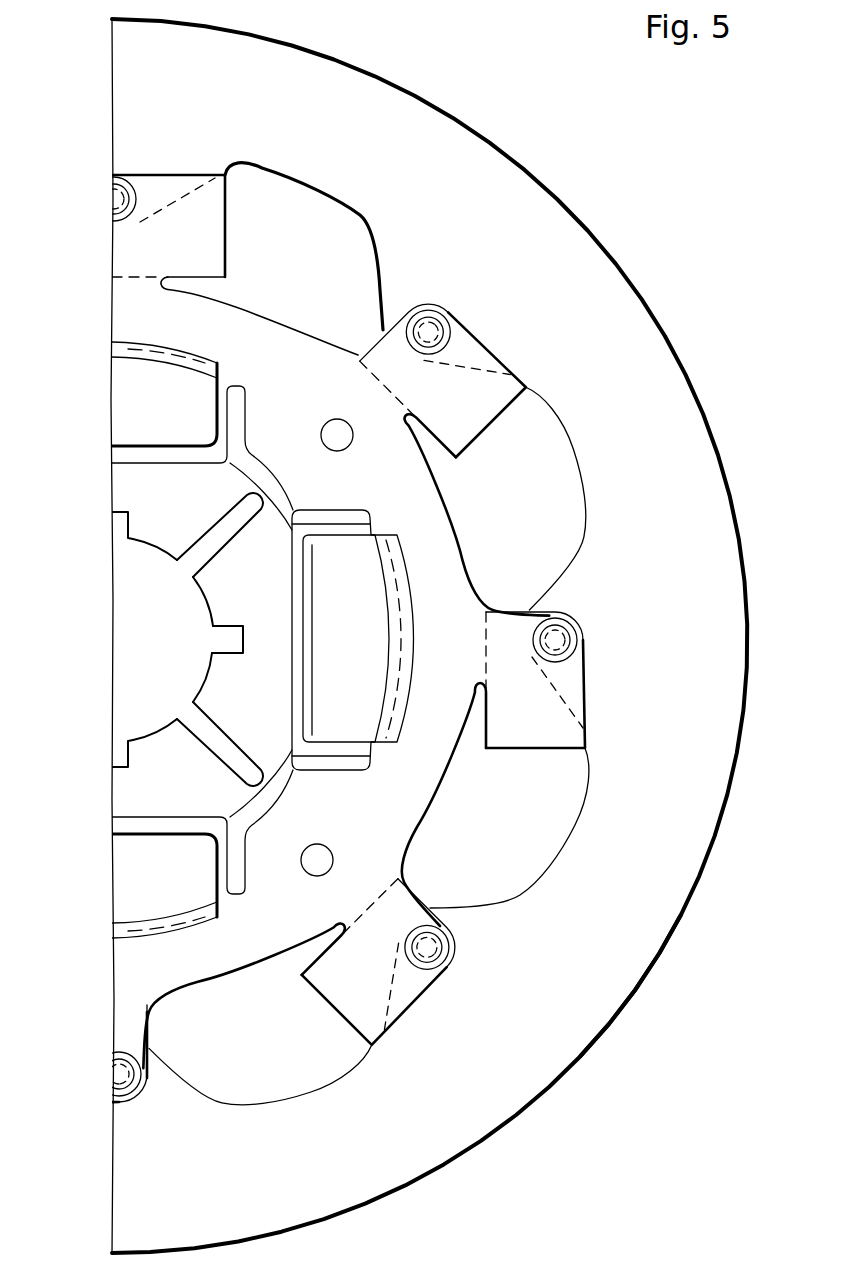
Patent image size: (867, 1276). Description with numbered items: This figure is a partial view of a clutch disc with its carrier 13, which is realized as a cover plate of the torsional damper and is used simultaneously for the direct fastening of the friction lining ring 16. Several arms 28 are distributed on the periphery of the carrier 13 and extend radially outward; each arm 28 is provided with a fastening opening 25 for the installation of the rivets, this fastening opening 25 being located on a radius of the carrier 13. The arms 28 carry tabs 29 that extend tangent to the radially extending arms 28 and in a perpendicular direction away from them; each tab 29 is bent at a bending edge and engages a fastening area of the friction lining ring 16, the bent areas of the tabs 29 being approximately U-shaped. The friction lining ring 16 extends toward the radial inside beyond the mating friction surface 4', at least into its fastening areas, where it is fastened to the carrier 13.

The mating friction surface 4' is at (442, 636).
The carrier 13 is at (112, 970).
The friction lining ring 16 is at (643, 990).
The fastening opening 25 is at (465, 334).
The arm 28 is at (432, 300).
The tab 29 is at (458, 322).